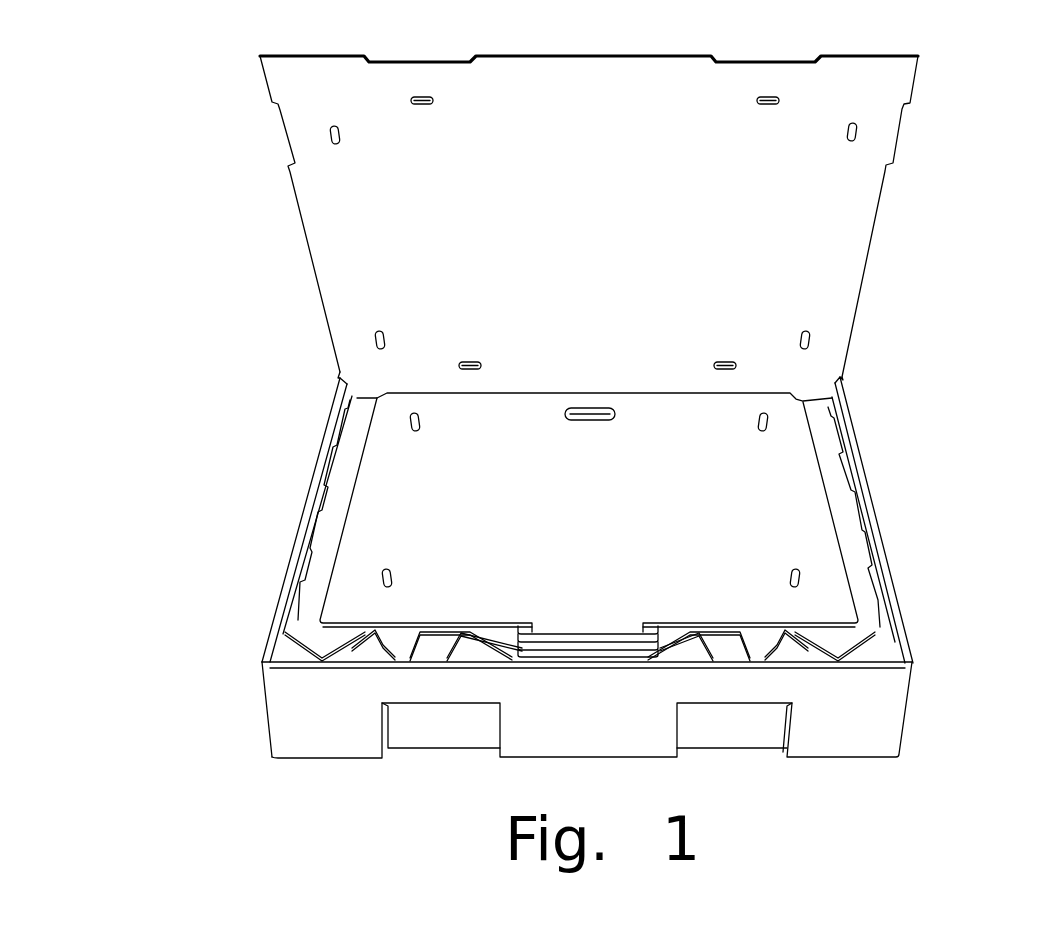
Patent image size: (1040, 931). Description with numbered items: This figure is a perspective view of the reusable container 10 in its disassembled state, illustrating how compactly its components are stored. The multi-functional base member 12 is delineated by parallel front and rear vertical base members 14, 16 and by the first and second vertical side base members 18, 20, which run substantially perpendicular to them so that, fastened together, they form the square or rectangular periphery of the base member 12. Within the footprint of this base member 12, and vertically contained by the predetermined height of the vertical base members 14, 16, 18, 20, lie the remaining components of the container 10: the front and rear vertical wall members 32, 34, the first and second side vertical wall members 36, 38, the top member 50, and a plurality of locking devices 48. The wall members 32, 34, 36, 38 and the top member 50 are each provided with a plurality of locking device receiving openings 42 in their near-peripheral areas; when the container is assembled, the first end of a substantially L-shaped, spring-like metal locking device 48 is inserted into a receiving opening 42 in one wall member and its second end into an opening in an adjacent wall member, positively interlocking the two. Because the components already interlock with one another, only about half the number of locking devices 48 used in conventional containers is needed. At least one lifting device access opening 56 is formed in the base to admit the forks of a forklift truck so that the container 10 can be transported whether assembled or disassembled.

The reusable container 10 is at (260, 308).
The base member 12 is at (265, 712).
The front vertical base member 14 is at (296, 735).
The rear vertical base member 16 is at (845, 380).
The first vertical side base member 18 is at (860, 471).
The second vertical side base member 20 is at (318, 485).
The front vertical wall member 32 is at (365, 542).
The rear vertical wall member 34 is at (380, 578).
The first side vertical wall member 36 is at (405, 582).
The second side vertical wall member 38 is at (430, 590).
The locking device receiving opening 42 is at (857, 139).
The locking device 48 is at (870, 656).
The top member 50 is at (848, 233).
The lifting device access opening 56 is at (722, 765).